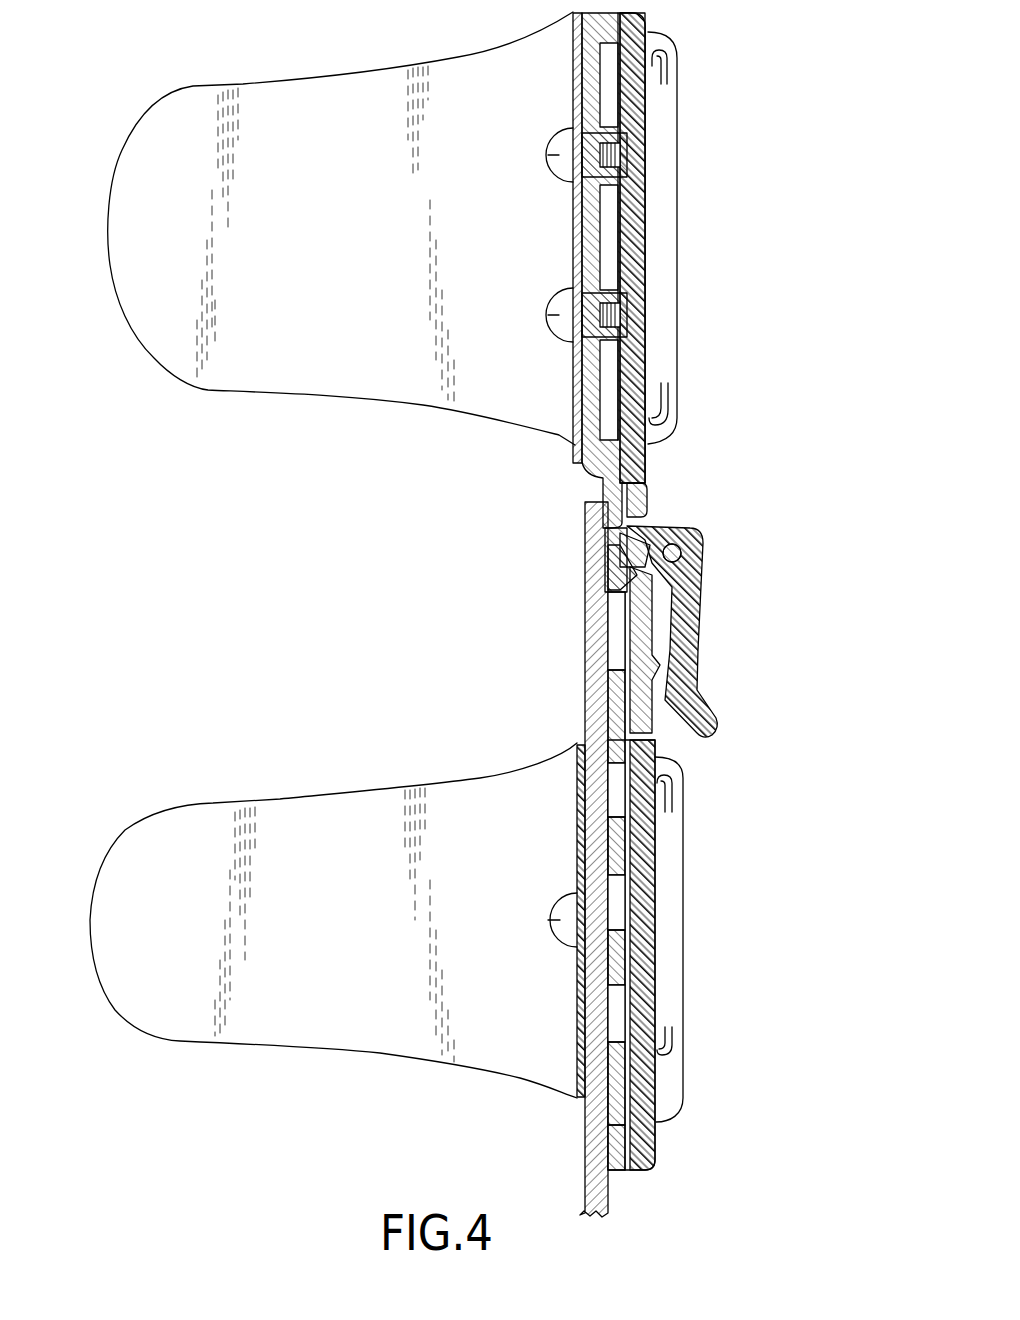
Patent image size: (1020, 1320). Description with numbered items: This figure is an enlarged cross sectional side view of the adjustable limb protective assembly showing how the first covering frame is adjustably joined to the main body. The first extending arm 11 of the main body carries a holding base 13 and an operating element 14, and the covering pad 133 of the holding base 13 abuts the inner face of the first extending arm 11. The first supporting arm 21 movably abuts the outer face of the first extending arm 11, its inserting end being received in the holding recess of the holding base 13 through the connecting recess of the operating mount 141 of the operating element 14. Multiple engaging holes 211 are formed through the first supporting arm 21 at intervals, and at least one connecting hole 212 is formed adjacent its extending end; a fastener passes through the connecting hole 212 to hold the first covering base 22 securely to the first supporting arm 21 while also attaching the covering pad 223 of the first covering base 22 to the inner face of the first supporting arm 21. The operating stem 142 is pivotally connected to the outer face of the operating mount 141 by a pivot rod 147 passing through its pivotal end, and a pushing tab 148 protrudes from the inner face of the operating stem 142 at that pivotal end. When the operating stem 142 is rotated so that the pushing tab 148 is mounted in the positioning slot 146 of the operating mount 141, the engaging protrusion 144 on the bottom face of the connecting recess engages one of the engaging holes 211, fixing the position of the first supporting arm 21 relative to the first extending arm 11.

The first extending arm 11 is at (624, 1195).
The holding base 13 is at (667, 1145).
The operating element 14 is at (734, 608).
The first supporting arm 21 is at (621, 1107).
The first covering base 22 is at (692, 217).
The covering pad 133 is at (326, 809).
The operating mount 141 is at (653, 496).
The operating stem 142 is at (698, 658).
The engaging protrusion 144 is at (614, 563).
The positioning slot 146 is at (642, 546).
The pivot rod 147 is at (676, 553).
The pushing tab 148 is at (626, 585).
The engaging holes 211 is at (613, 690).
The connecting hole 212 is at (630, 305).
The covering pad 223 is at (326, 377).